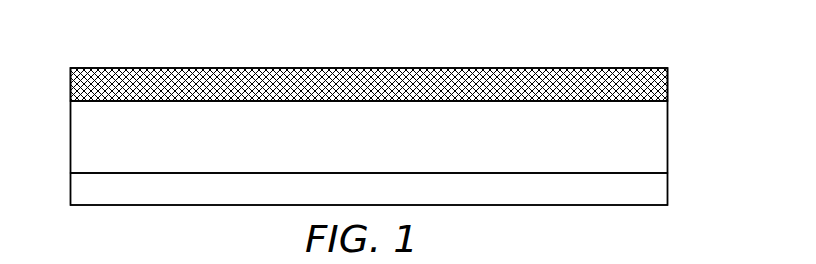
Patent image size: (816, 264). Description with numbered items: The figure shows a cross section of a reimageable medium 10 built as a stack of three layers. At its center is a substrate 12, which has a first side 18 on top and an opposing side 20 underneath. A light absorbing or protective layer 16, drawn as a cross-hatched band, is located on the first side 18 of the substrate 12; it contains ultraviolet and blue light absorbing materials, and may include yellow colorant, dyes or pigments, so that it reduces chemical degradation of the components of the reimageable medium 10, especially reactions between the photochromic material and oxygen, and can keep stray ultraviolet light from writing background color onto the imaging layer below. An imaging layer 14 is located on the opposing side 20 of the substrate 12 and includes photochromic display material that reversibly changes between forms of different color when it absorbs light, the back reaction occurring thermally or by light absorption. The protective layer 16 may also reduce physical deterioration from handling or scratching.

The reimageable medium 10 is at (450, 43).
The substrate 12 is at (658, 133).
The imaging layer 14 is at (658, 187).
The light absorbing or protective layer 16 is at (665, 75).
The first side 18 is at (90, 102).
The opposing side 20 is at (90, 172).